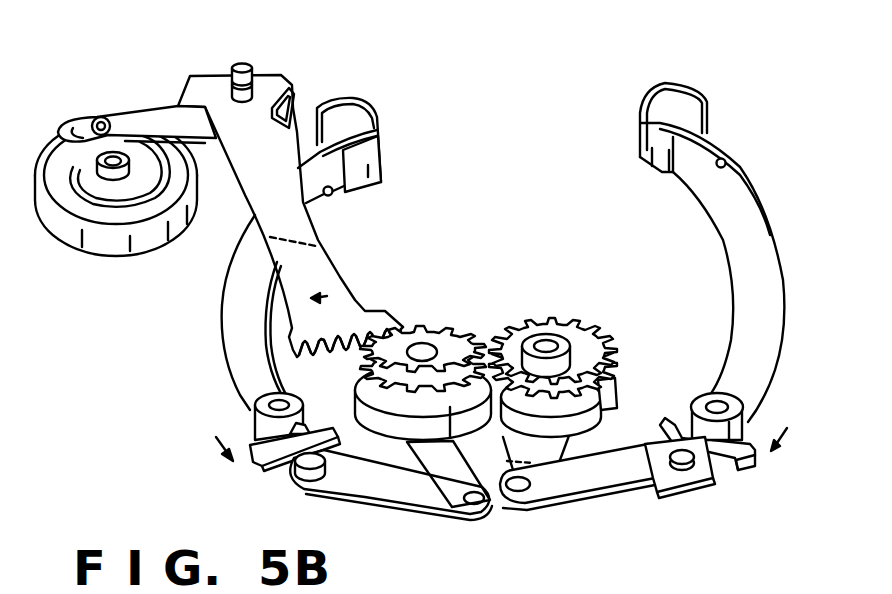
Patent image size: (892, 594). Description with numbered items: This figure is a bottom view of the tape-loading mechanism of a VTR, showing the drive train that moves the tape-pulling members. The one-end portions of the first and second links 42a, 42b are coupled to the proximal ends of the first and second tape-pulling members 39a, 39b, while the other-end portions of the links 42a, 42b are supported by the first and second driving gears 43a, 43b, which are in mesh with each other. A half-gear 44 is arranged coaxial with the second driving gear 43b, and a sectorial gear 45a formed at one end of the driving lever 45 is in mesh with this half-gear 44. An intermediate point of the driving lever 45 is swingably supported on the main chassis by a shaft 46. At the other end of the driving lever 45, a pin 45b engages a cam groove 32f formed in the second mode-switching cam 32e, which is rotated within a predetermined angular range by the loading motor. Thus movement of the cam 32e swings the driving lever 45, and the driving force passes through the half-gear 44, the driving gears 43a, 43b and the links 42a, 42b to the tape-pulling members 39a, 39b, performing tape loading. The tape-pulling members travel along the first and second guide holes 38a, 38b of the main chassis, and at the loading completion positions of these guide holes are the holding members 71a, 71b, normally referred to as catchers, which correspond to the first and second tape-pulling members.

The second mode-switching cam 32e is at (129, 250).
The cam groove 32f is at (90, 240).
The first guide hole 38a is at (725, 166).
The second guide hole 38b is at (332, 195).
The first tape-pulling member 39a is at (760, 418).
The second tape-pulling member 39b is at (252, 428).
The first link 42a is at (590, 488).
The second link 42b is at (413, 496).
The first driving gear 43a is at (599, 337).
The second driving gear 43b is at (404, 324).
The half-gear 44 is at (452, 341).
The driving lever 45 is at (280, 155).
The sectorial gear 45a is at (360, 316).
The pin 45b is at (98, 118).
The shaft 46 is at (236, 62).
The holding member 71a is at (638, 111).
The holding member 71b is at (381, 114).